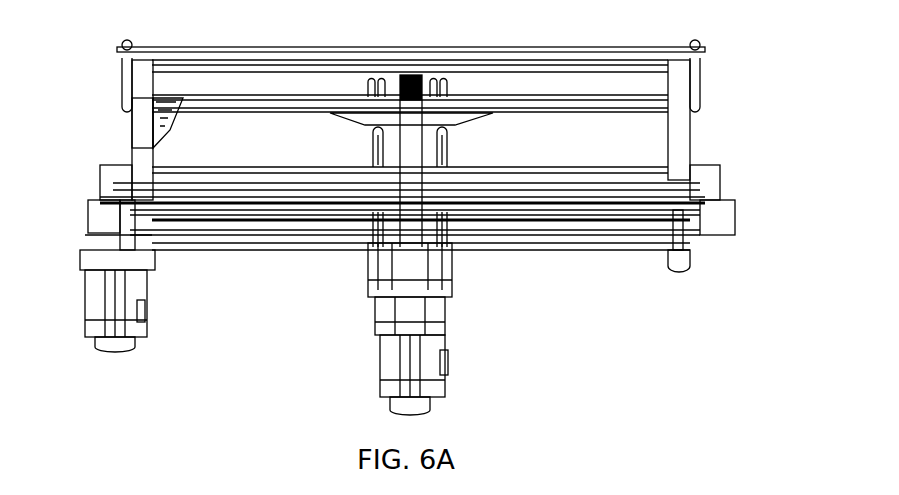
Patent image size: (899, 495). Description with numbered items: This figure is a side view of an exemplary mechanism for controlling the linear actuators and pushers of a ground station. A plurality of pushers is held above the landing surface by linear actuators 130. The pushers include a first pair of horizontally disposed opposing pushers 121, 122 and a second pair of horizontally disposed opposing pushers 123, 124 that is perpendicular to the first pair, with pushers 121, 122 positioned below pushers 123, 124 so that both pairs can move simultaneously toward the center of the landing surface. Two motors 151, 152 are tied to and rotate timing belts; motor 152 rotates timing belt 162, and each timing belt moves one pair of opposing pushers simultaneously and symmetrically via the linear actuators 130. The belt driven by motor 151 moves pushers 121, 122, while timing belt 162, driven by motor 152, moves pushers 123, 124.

The linear actuators 130 is at (112, 70).
The pusher 121 is at (128, 157).
The pusher 122 is at (686, 150).
The pusher 123 is at (610, 44).
The pusher 124 is at (545, 196).
The timing belt 162 is at (411, 149).
The motor 151 is at (155, 341).
The motor 152 is at (460, 374).